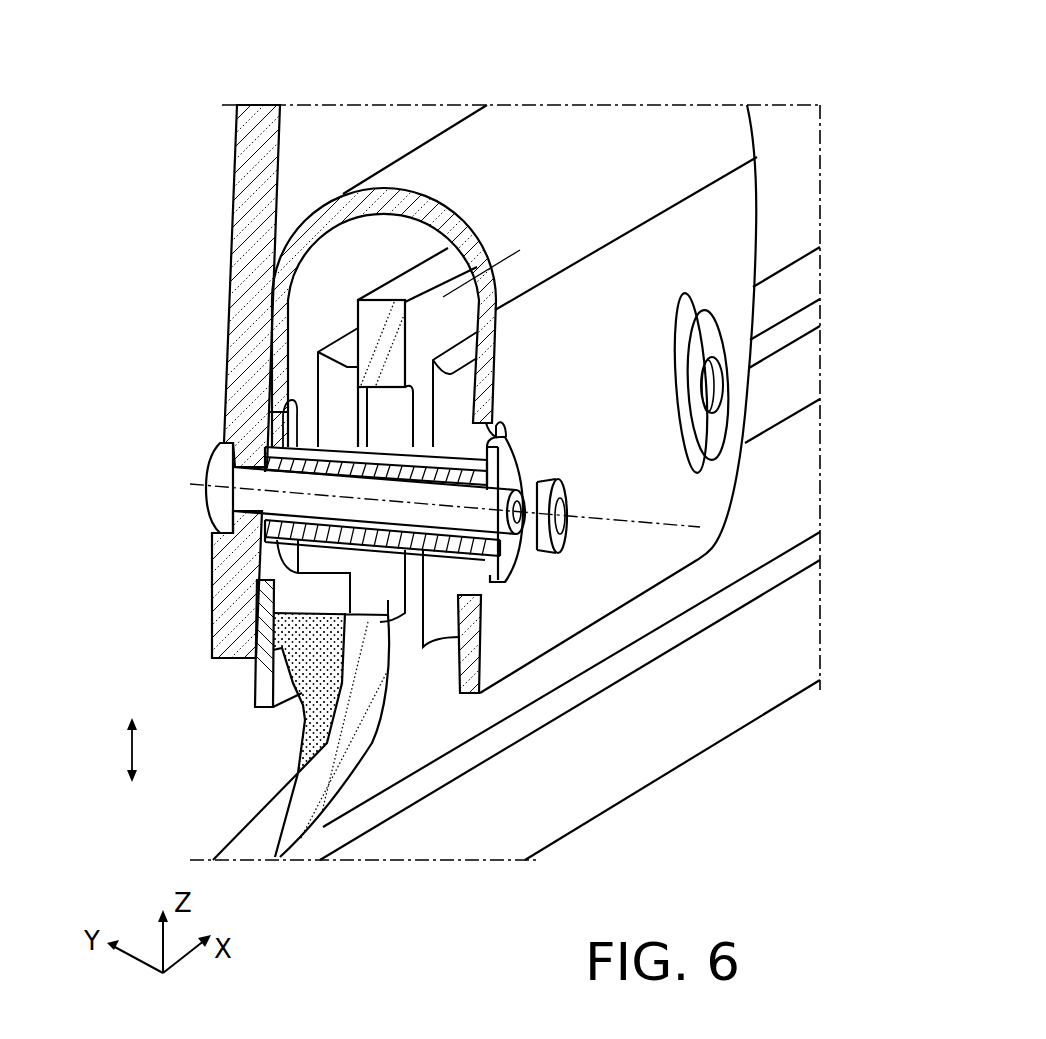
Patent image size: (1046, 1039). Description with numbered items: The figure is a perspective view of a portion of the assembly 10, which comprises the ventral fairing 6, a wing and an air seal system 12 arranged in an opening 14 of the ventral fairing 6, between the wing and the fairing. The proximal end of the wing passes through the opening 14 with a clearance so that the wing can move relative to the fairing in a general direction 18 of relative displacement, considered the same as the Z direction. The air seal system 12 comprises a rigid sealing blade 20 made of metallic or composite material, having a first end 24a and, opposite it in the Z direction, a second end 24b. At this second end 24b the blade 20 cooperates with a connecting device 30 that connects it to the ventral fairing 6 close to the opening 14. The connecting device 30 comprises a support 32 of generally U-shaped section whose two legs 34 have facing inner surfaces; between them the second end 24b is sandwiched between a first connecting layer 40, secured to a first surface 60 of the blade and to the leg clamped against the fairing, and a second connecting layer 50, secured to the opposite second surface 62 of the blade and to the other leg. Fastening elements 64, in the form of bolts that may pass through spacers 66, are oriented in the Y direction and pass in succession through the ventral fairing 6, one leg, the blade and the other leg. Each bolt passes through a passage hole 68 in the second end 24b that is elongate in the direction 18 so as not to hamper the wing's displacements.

The assembly 10 is at (267, 92).
The ventral fairing 6 is at (213, 412).
The opening 14 is at (253, 658).
The first surface 60 is at (282, 305).
The legs 34 is at (720, 210).
The support 32 is at (582, 131).
The second connecting layer 50 is at (500, 385).
The second end 24b is at (418, 323).
The second surface 62 is at (486, 268).
The first connecting layer 40 is at (330, 377).
The passage hole 68 is at (385, 398).
The spacers 66 is at (513, 457).
The fastening elements 64 is at (713, 380).
The connecting device 30 is at (654, 612).
The first end 24a is at (617, 730).
The air seal system 12 is at (337, 868).
The sealing blade 20 is at (502, 812).
The general direction 18 is at (128, 750).